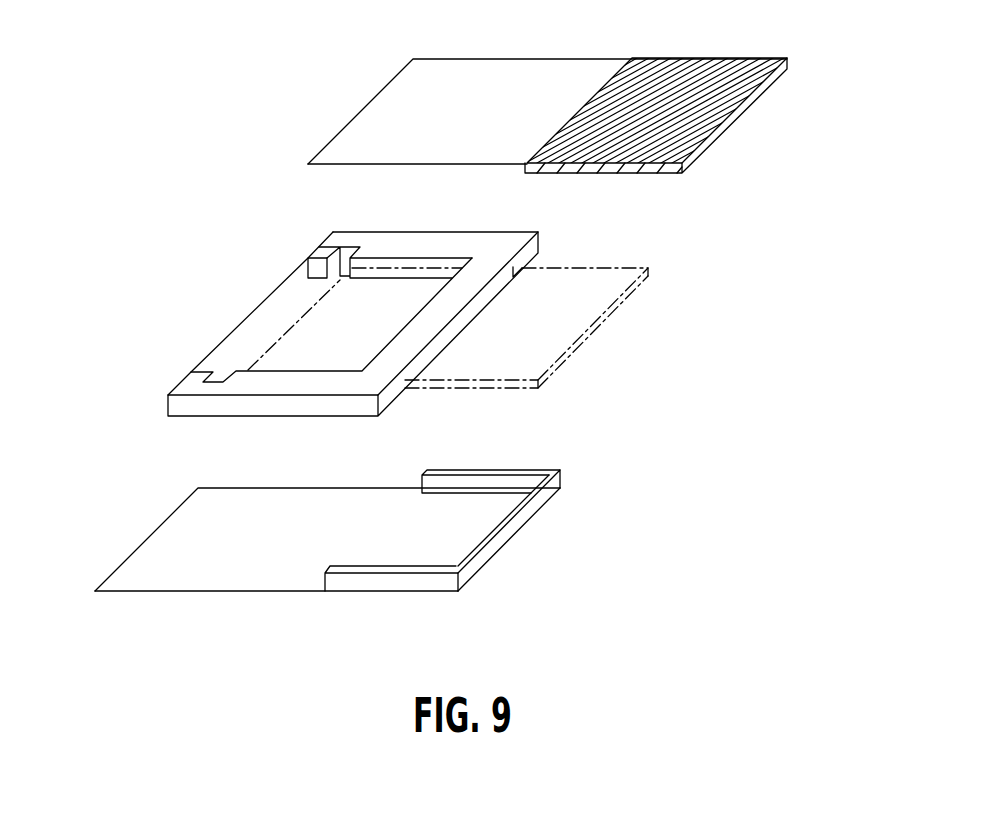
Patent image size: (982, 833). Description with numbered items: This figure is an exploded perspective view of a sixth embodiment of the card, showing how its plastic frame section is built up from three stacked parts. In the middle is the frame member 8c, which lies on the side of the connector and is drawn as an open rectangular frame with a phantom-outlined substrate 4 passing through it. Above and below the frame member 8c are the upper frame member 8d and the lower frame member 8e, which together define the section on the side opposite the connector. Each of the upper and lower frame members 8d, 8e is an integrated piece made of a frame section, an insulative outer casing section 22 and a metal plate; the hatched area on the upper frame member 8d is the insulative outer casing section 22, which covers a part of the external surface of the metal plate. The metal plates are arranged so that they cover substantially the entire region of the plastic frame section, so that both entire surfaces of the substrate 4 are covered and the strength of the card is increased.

The substrate 4 is at (604, 318).
The frame member 8c is at (307, 263).
The upper frame member 8d is at (558, 123).
The lower frame member 8e is at (372, 533).
The insulative outer casing section 22 is at (719, 63).